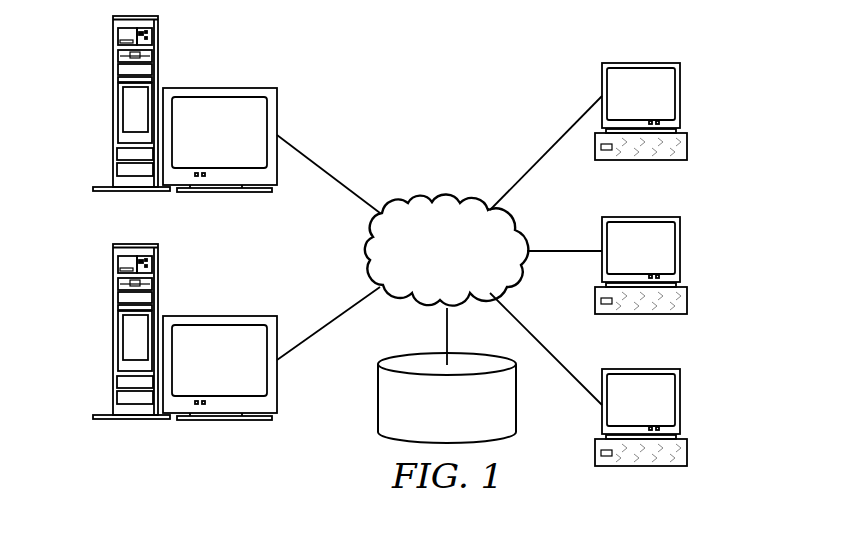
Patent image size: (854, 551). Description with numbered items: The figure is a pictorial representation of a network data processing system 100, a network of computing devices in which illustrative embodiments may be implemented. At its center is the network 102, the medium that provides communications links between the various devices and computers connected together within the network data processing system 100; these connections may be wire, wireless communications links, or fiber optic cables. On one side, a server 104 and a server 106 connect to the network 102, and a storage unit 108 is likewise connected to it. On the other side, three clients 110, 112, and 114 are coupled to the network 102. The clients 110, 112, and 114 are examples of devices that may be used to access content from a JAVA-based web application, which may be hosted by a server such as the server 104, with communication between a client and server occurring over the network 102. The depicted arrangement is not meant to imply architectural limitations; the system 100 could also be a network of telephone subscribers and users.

The network data processing system 100 is at (345, 73).
The network 102 is at (420, 194).
The server 104 is at (113, 106).
The server 106 is at (113, 328).
The storage unit 108 is at (378, 400).
The client 110 is at (681, 95).
The client 112 is at (681, 249).
The client 114 is at (681, 402).